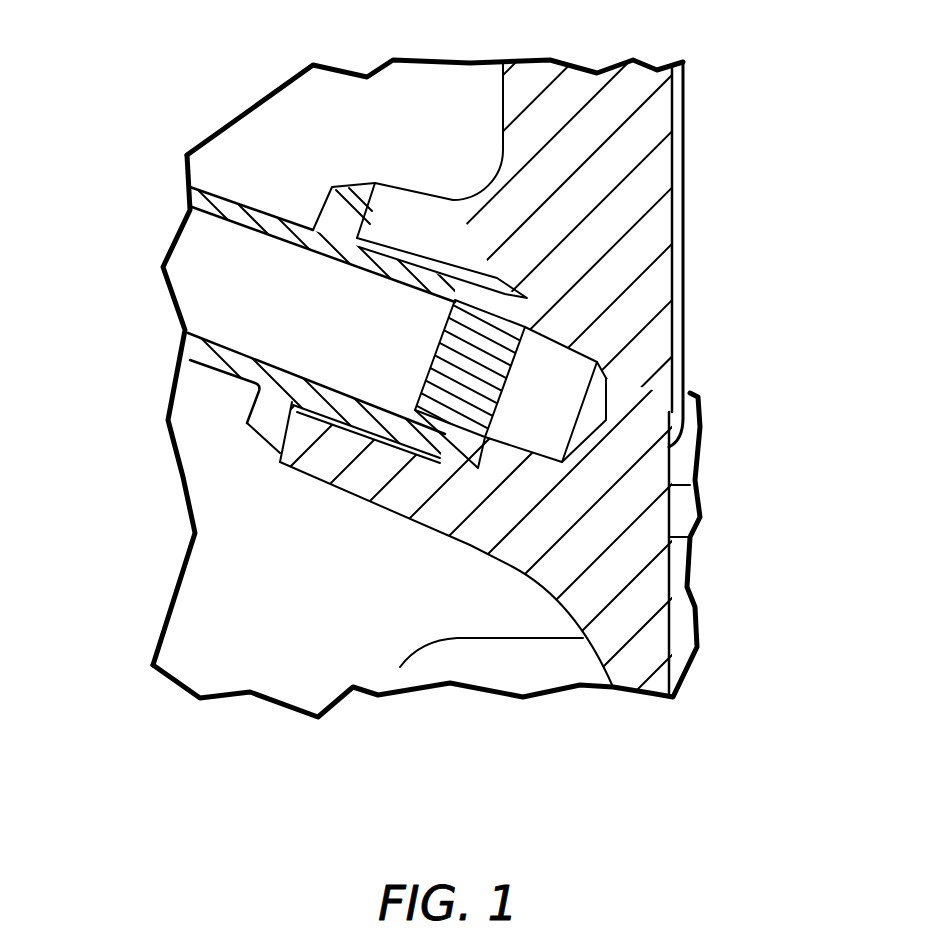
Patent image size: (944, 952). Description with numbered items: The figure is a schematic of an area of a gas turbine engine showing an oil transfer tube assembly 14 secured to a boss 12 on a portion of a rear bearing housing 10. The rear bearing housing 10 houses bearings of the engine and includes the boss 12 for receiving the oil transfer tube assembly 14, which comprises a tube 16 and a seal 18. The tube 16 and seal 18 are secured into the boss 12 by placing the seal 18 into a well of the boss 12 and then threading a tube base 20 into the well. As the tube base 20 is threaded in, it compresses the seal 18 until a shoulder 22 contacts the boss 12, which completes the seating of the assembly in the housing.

The rear bearing housing 10 is at (762, 145).
The boss 12 is at (449, 178).
The oil transfer tube assembly 14 is at (146, 308).
The tube 16 is at (235, 175).
The seal 18 is at (483, 445).
The tube base 20 is at (360, 365).
The shoulder 22 is at (343, 193).